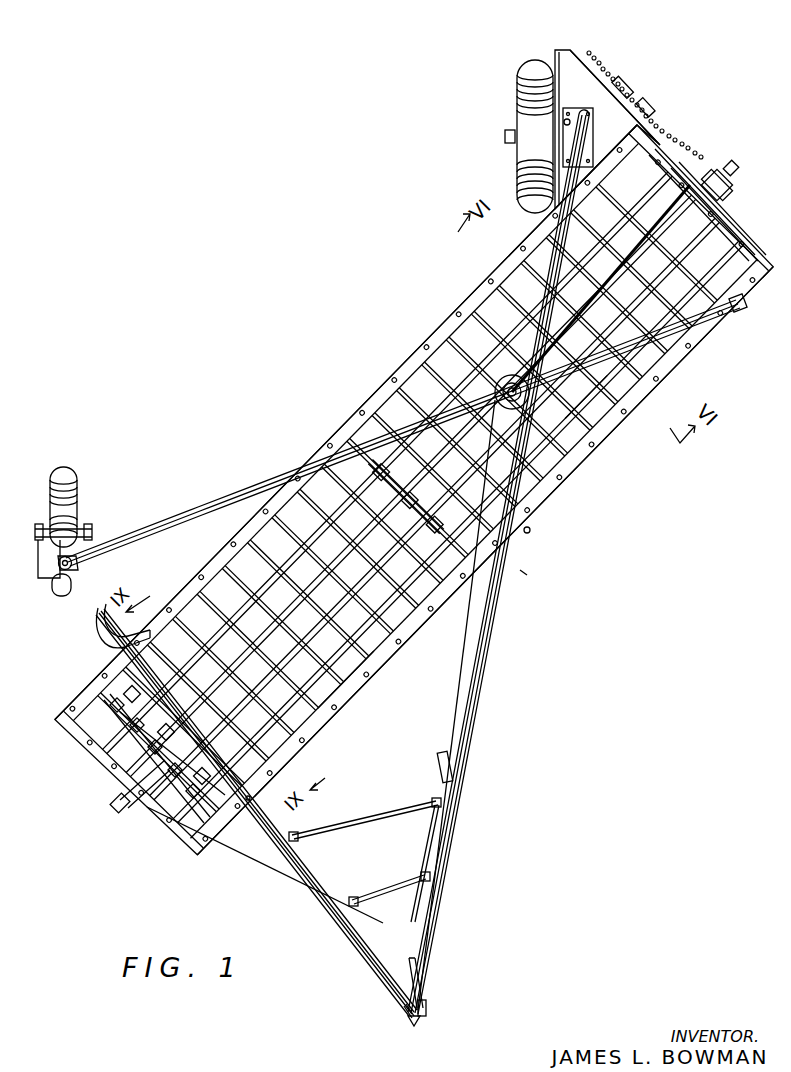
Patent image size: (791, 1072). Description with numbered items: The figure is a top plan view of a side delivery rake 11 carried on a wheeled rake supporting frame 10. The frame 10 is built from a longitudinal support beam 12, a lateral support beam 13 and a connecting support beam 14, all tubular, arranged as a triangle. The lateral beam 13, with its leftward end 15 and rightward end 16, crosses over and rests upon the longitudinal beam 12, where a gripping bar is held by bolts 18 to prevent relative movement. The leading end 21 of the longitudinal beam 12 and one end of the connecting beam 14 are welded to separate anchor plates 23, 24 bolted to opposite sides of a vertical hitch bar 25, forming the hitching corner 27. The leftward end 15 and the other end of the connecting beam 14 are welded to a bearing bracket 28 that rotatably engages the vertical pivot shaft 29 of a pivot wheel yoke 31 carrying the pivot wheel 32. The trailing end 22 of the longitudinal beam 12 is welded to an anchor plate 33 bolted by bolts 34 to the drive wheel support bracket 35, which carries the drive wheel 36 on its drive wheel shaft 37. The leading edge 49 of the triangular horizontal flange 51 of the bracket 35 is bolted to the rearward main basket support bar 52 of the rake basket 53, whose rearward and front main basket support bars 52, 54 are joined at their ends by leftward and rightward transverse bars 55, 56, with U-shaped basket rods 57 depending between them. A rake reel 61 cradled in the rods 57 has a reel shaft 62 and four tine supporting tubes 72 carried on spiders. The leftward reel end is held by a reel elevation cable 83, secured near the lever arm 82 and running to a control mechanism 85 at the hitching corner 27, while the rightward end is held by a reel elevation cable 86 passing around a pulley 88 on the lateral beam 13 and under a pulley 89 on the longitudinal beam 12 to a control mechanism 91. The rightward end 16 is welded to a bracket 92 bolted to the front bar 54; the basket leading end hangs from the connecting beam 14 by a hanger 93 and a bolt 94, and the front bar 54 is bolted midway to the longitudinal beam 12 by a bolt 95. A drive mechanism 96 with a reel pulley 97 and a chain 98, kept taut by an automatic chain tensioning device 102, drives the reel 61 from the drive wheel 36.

The rake supporting frame 10 is at (490, 745).
The side delivery rake 11 is at (526, 580).
The longitudinal support beam 12 is at (493, 620).
The lateral support beam 13 is at (297, 470).
The connecting support beam 14 is at (278, 833).
The leftward end of the lateral beam 15 is at (122, 532).
The rightward end of the lateral beam 16 is at (707, 330).
The bolts 18 is at (598, 410).
The leading end of the longitudinal beam 21 is at (435, 943).
The trailing end of the longitudinal beam 22 is at (567, 183).
The anchor plate 23 is at (426, 1012).
The anchor plate 24 is at (406, 1013).
The hitch bar 25 is at (414, 1026).
The hitching corner 27 is at (446, 985).
The bearing bracket 28 is at (67, 572).
The pivot shaft 29 is at (56, 596).
The pivot wheel yoke 31 is at (40, 577).
The pivot wheel 32 is at (70, 473).
The anchor plate 33 is at (565, 122).
The bolts 34 is at (567, 113).
The drive wheel support bracket 35 is at (542, 54).
The drive wheel 36 is at (523, 110).
The drive wheel shaft 37 is at (505, 137).
The leading edge of the horizontal flange 49 is at (652, 140).
The horizontal flange 51 is at (573, 70).
The rearward main basket support bar 52 is at (450, 323).
The rake basket 53 is at (393, 357).
The front main basket support bar 54 is at (383, 657).
The leftward transverse bar 55 is at (82, 735).
The rightward transverse bar 56 is at (727, 228).
The basket rods 57 is at (417, 600).
The rake reel 61 is at (575, 444).
The reel shaft 62 is at (233, 593).
The tine supporting tubes 72 is at (477, 293).
The lever arm 82 is at (140, 812).
The reel elevation cable 83 is at (288, 868).
The control mechanism 85 is at (348, 863).
The reel elevation cable 86 is at (457, 713).
The pulley 88 is at (503, 380).
The pulley 89 is at (440, 760).
The control mechanism 91 is at (411, 858).
The bracket 92 is at (740, 310).
The hanger 93 is at (103, 620).
The bolt 94 is at (248, 802).
The bolt 95 is at (530, 532).
The drive mechanism 96 is at (679, 116).
The reel pulley 97 is at (745, 189).
The chain 98 is at (608, 78).
The automatic chain tensioning device 102 is at (653, 95).